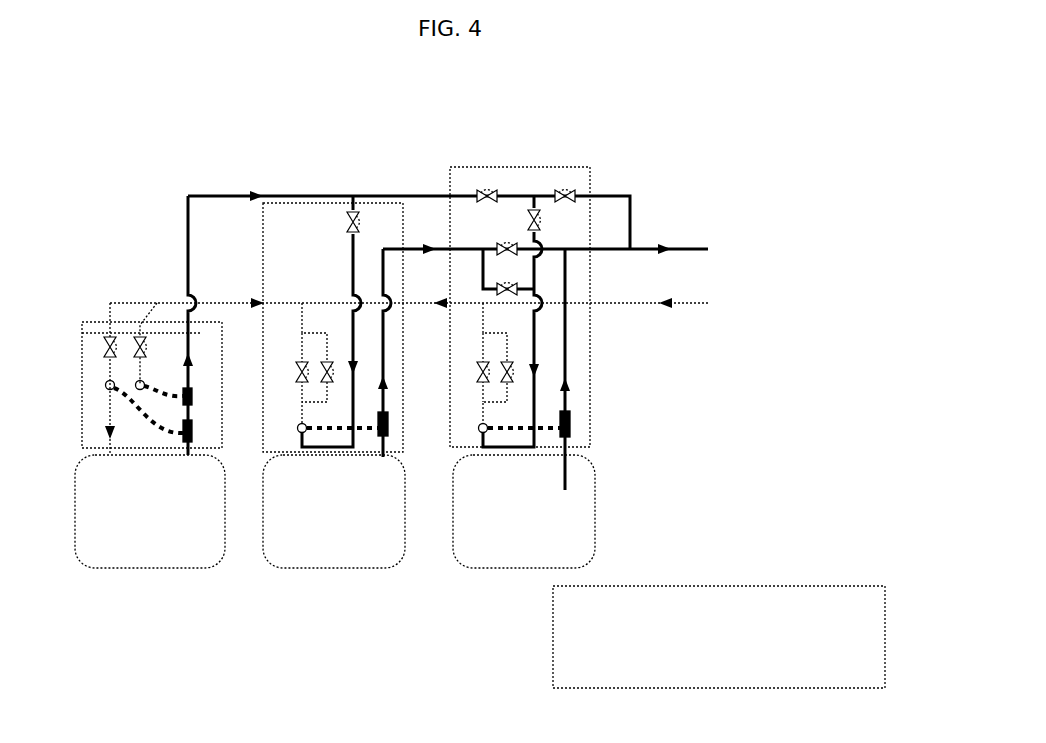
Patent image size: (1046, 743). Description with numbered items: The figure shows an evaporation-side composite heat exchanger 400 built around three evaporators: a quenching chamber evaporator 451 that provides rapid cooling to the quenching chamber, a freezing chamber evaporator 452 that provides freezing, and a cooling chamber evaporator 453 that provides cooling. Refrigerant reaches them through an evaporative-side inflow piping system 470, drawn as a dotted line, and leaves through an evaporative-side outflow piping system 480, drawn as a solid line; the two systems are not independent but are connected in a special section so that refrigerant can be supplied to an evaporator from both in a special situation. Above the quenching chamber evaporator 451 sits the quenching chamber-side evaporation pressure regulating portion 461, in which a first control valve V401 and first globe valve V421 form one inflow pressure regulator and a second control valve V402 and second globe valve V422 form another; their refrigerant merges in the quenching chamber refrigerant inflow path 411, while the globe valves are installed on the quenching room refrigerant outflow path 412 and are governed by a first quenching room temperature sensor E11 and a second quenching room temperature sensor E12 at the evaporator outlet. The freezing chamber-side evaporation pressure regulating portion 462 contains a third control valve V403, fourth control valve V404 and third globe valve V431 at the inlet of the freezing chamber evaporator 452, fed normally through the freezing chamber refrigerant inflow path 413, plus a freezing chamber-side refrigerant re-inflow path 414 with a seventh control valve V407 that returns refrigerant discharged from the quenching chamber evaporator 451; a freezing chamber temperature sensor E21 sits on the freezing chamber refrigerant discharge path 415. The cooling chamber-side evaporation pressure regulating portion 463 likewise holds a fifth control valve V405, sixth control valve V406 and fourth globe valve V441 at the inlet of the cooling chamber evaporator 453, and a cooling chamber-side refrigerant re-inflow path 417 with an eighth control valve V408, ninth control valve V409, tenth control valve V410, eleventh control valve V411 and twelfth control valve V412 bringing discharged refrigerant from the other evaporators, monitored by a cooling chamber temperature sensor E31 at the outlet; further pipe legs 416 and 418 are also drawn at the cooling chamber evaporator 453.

The evaporation-side composite heat exchanger 400 is at (378, 112).
The quenching chamber-side evaporation pressure regulating portion 461 is at (90, 322).
The freezing chamber-side evaporation pressure regulating portion 462 is at (312, 196).
The cooling chamber-side evaporation pressure regulating portion 463 is at (598, 318).
The quenching chamber evaporator 451 is at (150, 511).
The freezing chamber evaporator 452 is at (334, 511).
The cooling chamber evaporator 453 is at (524, 511).
The quenching chamber refrigerant inflow path 411 is at (112, 458).
The quenching room refrigerant outflow path 412 is at (190, 460).
The freezing chamber refrigerant inflow path 413 is at (300, 440).
The freezing chamber-side refrigerant re-inflow path 414 is at (355, 452).
The freezing chamber refrigerant discharge path 415 is at (383, 460).
The third inflow pipe 416 is at (480, 440).
The cooling chamber-side refrigerant re-inflow path 417 is at (566, 460).
The third return pipe 418 is at (568, 470).
The evaporative-side inflow piping system 470 is at (567, 620).
The evaporative-side outflow piping system 480 is at (567, 649).
The first control valve V401 is at (104, 347).
The second control valve V402 is at (146, 318).
The third control valve V403 is at (296, 366).
The fourth control valve V404 is at (330, 360).
The fifth control valve V405 is at (478, 368).
The sixth control valve V406 is at (503, 365).
The seventh control valve V407 is at (345, 219).
The eighth control valve V408 is at (502, 245).
The ninth control valve V409 is at (500, 285).
The tenth control valve V410 is at (541, 220).
The eleventh control valve V411 is at (487, 186).
The twelfth control valve V412 is at (565, 186).
The first globe valve V421 is at (105, 385).
The second globe valve V422 is at (138, 390).
The third globe valve V431 is at (297, 425).
The fourth globe valve V441 is at (478, 426).
The first quenching room temperature sensor E11 is at (192, 432).
The second quenching room temperature sensor E12 is at (192, 397).
The freezing chamber temperature sensor E21 is at (388, 428).
The cooling chamber temperature sensor E31 is at (570, 428).